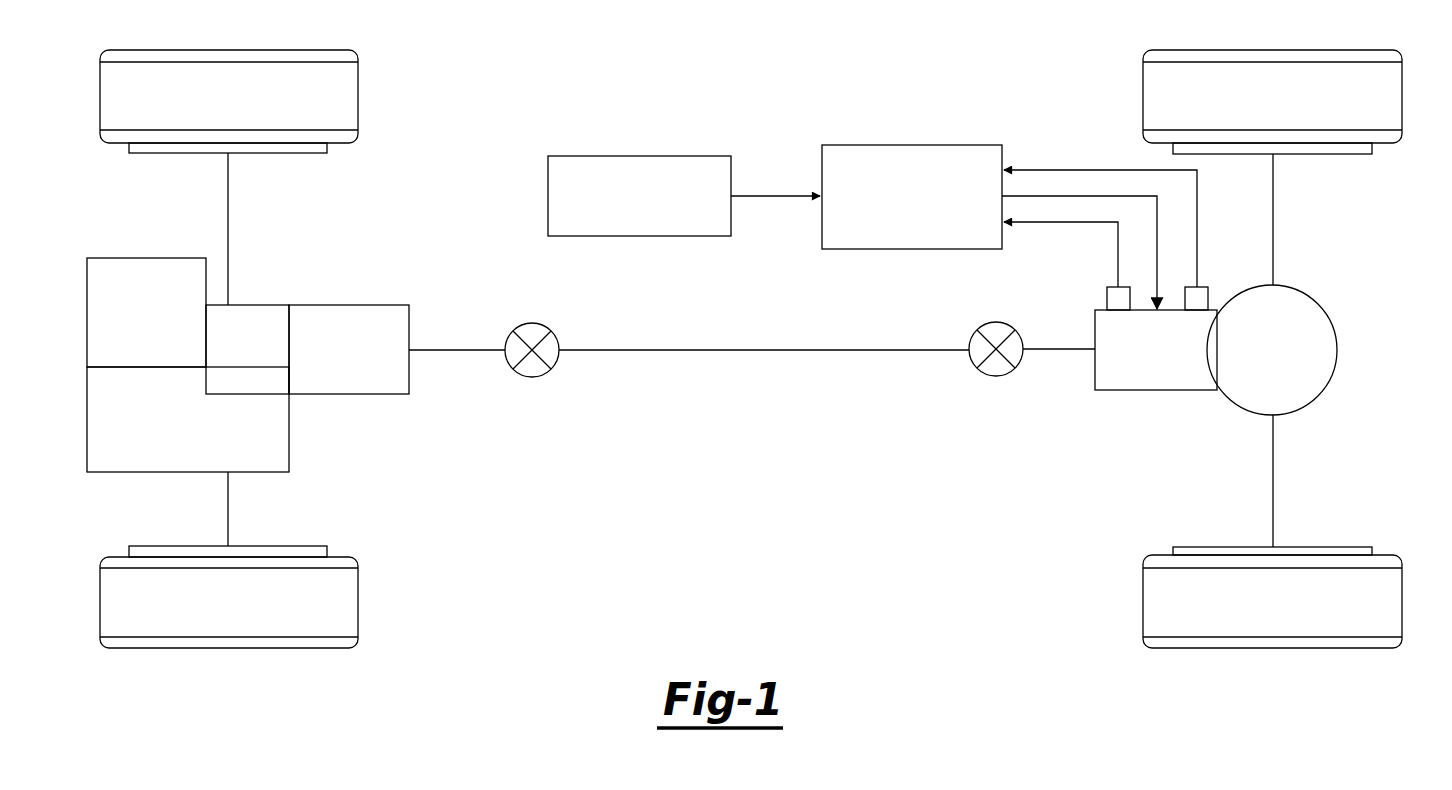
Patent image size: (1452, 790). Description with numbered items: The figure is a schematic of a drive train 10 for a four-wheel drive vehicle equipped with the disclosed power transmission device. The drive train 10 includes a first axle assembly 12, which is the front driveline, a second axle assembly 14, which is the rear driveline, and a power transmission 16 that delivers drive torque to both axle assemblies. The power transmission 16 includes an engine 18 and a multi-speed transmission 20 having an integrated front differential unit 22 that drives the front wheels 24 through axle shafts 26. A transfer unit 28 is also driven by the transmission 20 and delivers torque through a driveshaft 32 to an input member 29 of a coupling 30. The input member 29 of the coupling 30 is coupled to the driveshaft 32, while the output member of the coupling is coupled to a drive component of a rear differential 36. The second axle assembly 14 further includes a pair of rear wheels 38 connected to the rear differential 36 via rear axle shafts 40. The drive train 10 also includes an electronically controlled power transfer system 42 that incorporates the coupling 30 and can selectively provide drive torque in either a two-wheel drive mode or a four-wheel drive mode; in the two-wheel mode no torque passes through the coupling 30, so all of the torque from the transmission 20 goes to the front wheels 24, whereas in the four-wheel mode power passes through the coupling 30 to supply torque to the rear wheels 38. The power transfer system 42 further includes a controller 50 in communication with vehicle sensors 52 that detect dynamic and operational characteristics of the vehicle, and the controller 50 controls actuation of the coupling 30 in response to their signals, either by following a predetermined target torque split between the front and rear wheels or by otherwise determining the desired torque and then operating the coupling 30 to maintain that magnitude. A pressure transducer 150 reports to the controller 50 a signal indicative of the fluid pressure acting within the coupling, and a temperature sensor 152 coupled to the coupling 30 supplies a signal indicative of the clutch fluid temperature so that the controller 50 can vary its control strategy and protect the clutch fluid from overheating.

The drive train 10 is at (890, 522).
The first axle assembly 12 is at (280, 236).
The second axle assembly 14 is at (1318, 245).
The power transmission 16 is at (361, 437).
The engine 18 is at (144, 330).
The multi-speed transmission 20 is at (163, 437).
The front differential unit 22 is at (251, 370).
The front wheels 24 is at (345, 87).
The axle shafts 26 is at (228, 218).
The transfer unit 28 is at (349, 370).
The input member 29 is at (1050, 350).
The coupling 30 is at (1162, 402).
The driveshaft 32 is at (667, 370).
The rear differential 36 is at (1303, 380).
The rear wheels 38 is at (1158, 94).
The rear axle shafts 40 is at (1273, 188).
The power transfer system 42 is at (800, 82).
The controller 50 is at (908, 145).
The vehicle sensors 52 is at (640, 156).
The pressure transducer 150 is at (1210, 288).
The temperature sensor 152 is at (1106, 296).